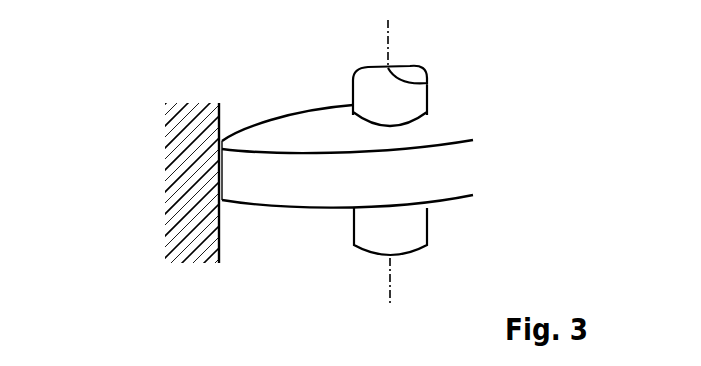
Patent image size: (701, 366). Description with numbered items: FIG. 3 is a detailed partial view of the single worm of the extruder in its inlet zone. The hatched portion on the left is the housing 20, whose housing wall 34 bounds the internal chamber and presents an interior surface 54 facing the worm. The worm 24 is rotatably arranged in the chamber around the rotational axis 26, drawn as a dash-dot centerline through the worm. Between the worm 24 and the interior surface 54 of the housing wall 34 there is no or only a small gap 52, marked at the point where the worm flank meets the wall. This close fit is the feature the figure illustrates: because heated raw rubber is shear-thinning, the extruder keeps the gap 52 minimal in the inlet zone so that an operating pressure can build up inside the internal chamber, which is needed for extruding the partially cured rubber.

The housing 20 is at (162, 189).
The housing wall 34 is at (162, 189).
The single worm 24 is at (447, 123).
The rotational axis 26 is at (390, 45).
The gap 52 is at (221, 139).
The interior surface 54 is at (219, 232).